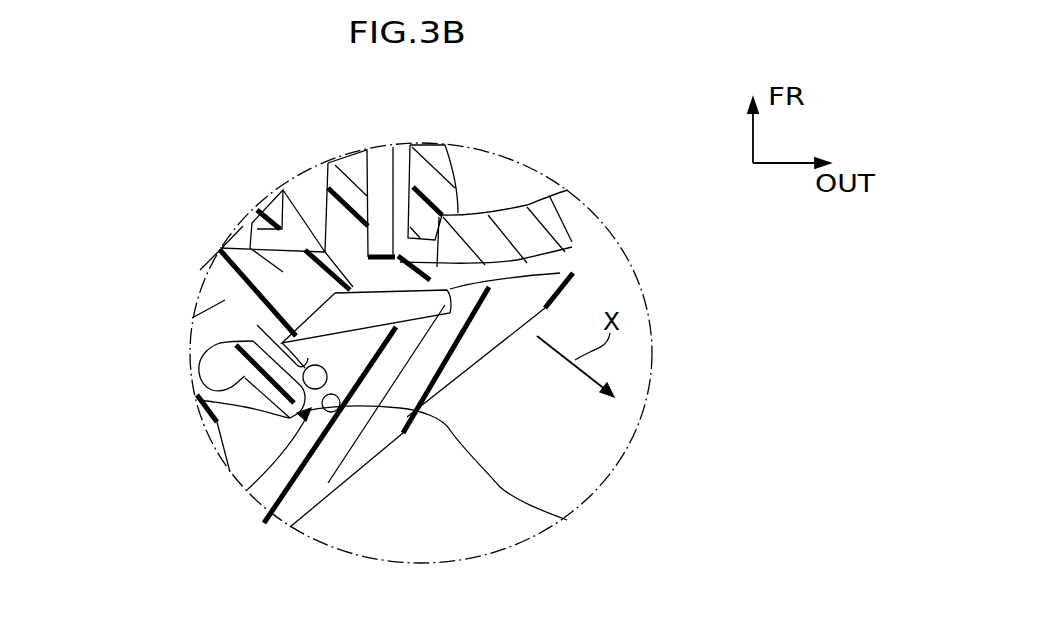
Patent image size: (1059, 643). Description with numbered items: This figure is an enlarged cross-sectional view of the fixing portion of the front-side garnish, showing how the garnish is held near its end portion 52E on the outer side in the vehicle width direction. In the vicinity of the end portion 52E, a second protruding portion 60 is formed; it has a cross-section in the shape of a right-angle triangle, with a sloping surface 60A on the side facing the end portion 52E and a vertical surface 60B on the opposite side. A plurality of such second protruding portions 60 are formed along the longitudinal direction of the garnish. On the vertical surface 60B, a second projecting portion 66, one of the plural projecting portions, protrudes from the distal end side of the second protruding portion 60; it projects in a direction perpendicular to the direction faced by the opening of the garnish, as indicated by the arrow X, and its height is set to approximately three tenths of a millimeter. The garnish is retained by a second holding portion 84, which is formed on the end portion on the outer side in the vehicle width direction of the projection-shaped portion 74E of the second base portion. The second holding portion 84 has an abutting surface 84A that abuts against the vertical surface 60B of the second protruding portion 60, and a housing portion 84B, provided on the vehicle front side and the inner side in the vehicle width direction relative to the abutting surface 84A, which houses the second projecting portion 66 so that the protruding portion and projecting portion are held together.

The second protruding portion 60 is at (379, 320).
The sloping surface 60A is at (396, 327).
The end portion 52E is at (560, 273).
The second projecting portion 66 is at (300, 353).
The vertical surface 60B is at (567, 520).
The second holding portion 84 is at (328, 412).
The abutting surface 84A is at (190, 412).
The housing portion 84B is at (202, 388).
The projection-shaped portion 74E is at (268, 308).